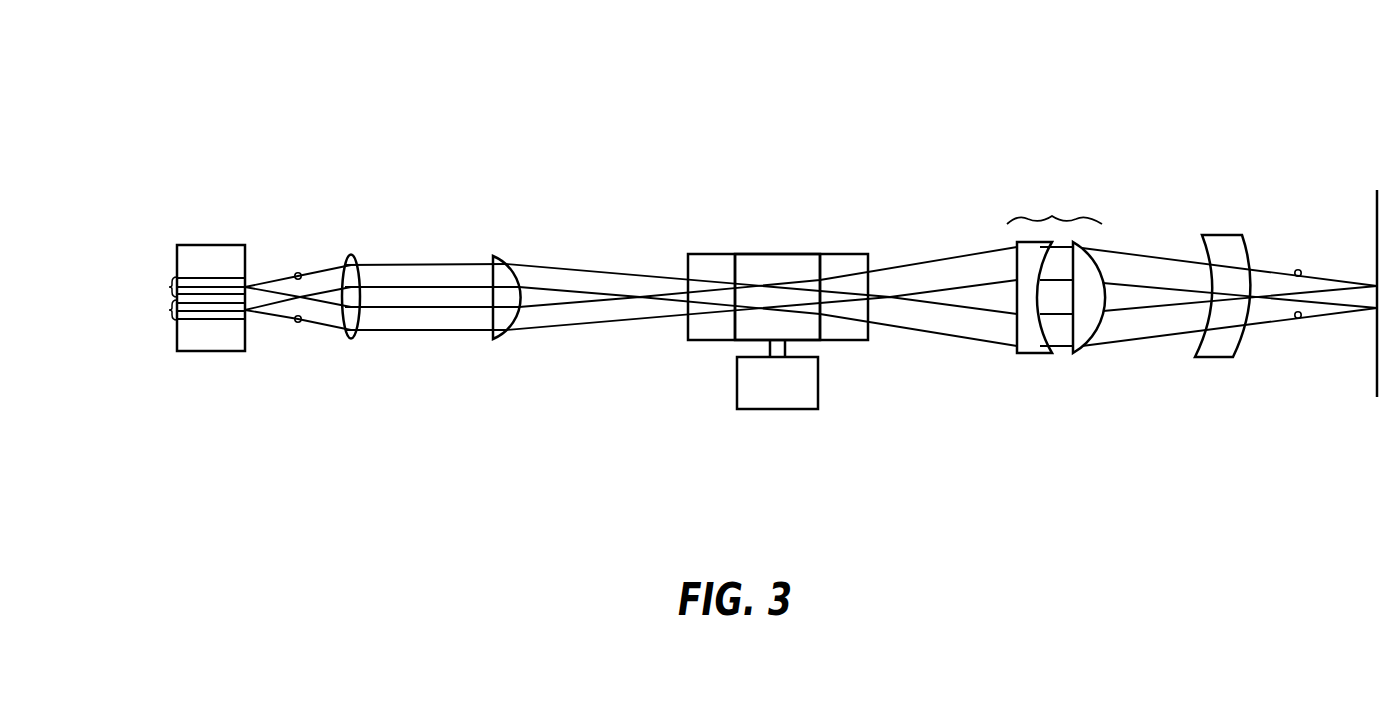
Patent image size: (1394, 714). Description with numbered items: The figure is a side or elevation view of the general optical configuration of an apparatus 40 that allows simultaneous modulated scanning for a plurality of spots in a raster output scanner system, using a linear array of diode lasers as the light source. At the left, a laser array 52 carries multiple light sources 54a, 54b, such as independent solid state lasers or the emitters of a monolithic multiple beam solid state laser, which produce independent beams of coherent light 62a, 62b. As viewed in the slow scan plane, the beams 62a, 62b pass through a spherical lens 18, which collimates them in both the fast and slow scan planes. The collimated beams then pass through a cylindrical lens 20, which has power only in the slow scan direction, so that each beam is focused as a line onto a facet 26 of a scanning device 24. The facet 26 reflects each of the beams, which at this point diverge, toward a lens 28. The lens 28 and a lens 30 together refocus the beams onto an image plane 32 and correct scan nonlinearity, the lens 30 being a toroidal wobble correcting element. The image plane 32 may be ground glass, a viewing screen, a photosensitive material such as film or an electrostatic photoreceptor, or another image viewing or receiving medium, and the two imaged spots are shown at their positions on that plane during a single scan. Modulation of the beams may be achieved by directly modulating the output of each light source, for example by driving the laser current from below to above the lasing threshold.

The apparatus 40 is at (968, 112).
The laser diode array 52 is at (217, 352).
The light source 54a is at (170, 287).
The light source 54b is at (170, 310).
The beam of coherent light 62a is at (299, 272).
The beam of coherent light 62b is at (299, 323).
The spherical lens 18 is at (355, 257).
The cylindrical lens 20 is at (494, 256).
The scanning device 24 is at (708, 342).
The facet 26 is at (775, 253).
The lens 28 is at (1052, 217).
The lens 30 is at (1232, 236).
The image plane 32 is at (1375, 372).